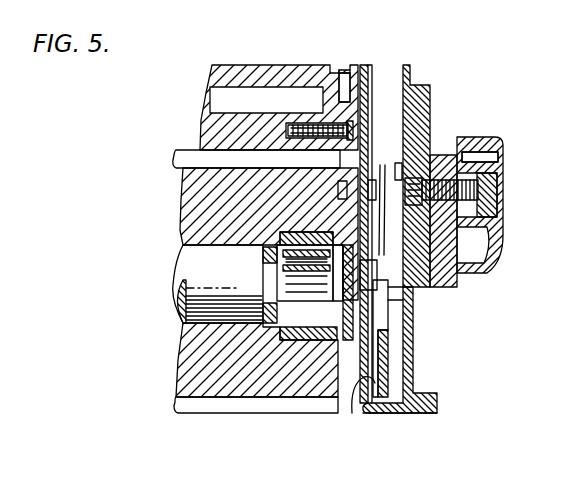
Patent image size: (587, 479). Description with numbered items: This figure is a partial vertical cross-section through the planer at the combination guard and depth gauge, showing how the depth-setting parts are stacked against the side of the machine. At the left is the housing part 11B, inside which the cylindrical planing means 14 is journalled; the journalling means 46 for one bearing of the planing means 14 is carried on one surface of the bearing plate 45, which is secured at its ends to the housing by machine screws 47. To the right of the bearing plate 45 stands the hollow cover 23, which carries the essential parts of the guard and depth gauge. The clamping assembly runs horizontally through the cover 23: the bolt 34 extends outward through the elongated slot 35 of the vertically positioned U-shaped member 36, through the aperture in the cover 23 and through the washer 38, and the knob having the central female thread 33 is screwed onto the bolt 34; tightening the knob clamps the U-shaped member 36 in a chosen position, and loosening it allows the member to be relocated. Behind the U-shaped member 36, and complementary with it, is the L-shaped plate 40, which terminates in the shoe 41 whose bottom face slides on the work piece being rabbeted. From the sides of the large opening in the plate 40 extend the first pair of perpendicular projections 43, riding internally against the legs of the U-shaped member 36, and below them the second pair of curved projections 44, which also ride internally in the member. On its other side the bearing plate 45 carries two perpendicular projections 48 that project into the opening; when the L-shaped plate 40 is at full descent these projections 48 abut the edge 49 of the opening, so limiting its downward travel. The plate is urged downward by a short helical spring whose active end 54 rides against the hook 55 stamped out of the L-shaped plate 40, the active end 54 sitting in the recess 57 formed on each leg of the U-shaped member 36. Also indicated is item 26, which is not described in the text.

The complementary housing part 11B is at (265, 84).
The cylindrical planing means 14 is at (186, 206).
The hollow cover 23 is at (430, 98).
The end cap 26 is at (496, 245).
The female thread 33 is at (480, 177).
The bolt 34 is at (478, 199).
The elongated slot 35 is at (378, 320).
The U-shaped member 36 is at (415, 374).
The washer 38 is at (437, 158).
The L-shaped plate 40 is at (364, 65).
The shoe 41 is at (383, 412).
The first pair of perpendicular projections 43 is at (414, 328).
The second pair of curved projections 44 is at (354, 409).
The bearing plate 45 is at (344, 95).
The journalling means 46 is at (262, 247).
The machine screws 47 is at (288, 130).
The perpendicular projections 48 is at (374, 277).
The edge 49 is at (334, 232).
The active end 54 is at (379, 205).
The hook 55 is at (372, 213).
The recess 57 is at (338, 189).